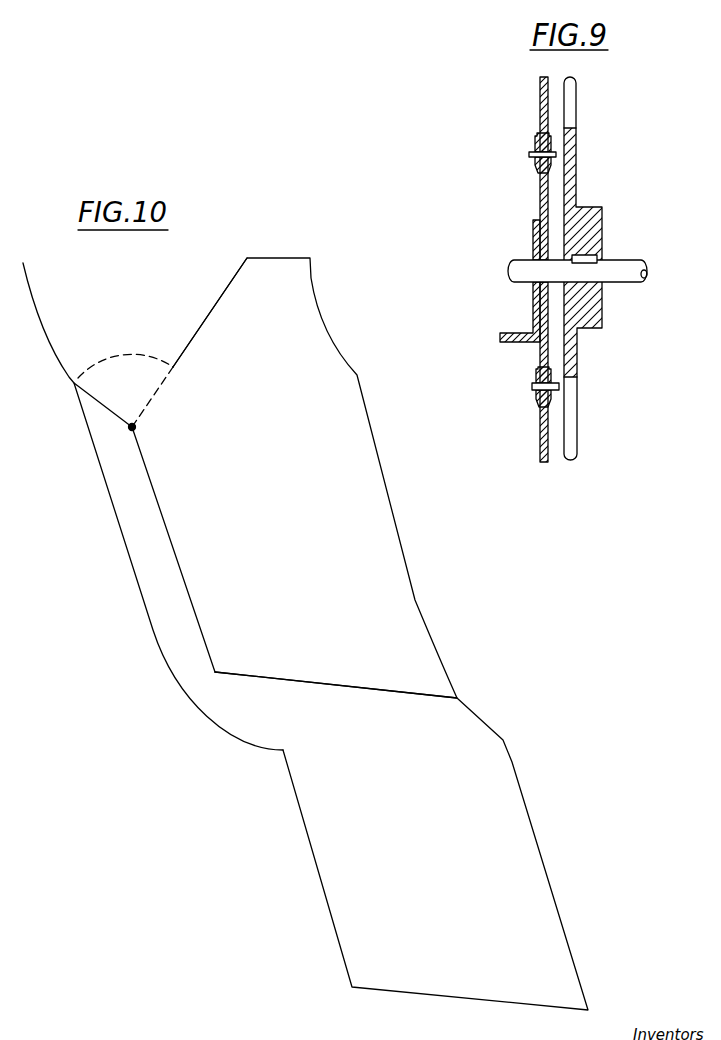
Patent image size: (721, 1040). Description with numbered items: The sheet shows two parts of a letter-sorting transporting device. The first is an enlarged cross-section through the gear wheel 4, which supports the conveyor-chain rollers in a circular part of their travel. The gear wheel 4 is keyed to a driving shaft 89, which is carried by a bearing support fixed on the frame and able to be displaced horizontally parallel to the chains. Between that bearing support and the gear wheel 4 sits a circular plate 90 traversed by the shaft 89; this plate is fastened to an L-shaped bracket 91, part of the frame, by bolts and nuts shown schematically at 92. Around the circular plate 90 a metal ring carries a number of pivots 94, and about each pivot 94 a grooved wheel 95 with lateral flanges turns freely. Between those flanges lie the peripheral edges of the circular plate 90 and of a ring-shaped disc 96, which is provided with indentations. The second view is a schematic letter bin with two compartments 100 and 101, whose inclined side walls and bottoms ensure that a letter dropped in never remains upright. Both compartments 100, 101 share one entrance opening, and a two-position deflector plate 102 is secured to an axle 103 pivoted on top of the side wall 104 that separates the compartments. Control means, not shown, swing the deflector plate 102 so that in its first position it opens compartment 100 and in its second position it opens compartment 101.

In FIG. 9, the gear wheel 4 is at (602, 320).
In FIG. 9, the driving shaft 89 is at (632, 280).
In FIG. 9, the circular plate 90 is at (540, 195).
In FIG. 9, the L-shaped bracket 91 is at (533, 315).
In FIG. 9, the bolts and nuts 92 is at (533, 236).
In FIG. 9, the pivot 94 is at (529, 156).
In FIG. 9, the grooved wheel 95 is at (536, 143).
In FIG. 9, the ring-shaped disc 96 is at (540, 437).
In FIG. 10, the compartment 100 is at (308, 475).
In FIG. 10, the compartment 101 is at (427, 865).
In FIG. 10, the deflector plate 102 is at (105, 406).
In FIG. 10, the axle 103 is at (136, 427).
In FIG. 10, the side wall 104 is at (151, 477).